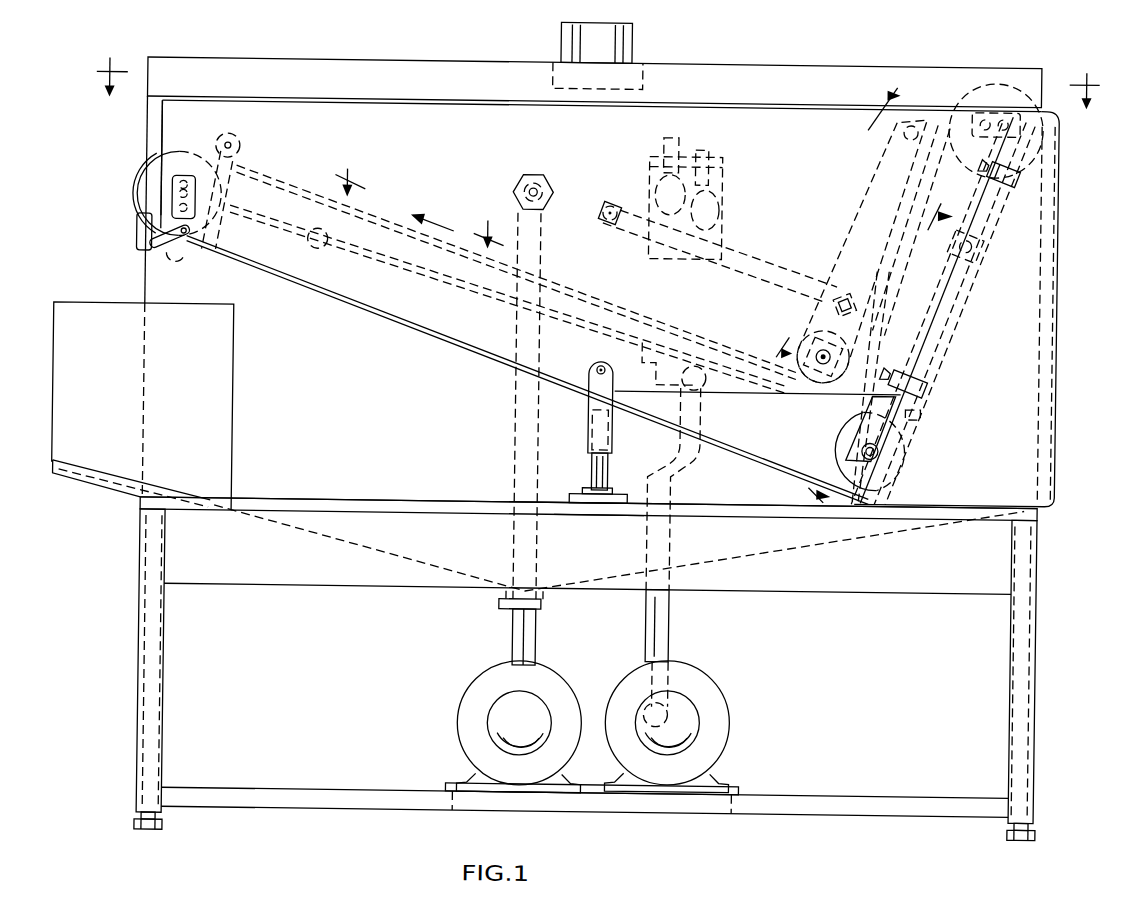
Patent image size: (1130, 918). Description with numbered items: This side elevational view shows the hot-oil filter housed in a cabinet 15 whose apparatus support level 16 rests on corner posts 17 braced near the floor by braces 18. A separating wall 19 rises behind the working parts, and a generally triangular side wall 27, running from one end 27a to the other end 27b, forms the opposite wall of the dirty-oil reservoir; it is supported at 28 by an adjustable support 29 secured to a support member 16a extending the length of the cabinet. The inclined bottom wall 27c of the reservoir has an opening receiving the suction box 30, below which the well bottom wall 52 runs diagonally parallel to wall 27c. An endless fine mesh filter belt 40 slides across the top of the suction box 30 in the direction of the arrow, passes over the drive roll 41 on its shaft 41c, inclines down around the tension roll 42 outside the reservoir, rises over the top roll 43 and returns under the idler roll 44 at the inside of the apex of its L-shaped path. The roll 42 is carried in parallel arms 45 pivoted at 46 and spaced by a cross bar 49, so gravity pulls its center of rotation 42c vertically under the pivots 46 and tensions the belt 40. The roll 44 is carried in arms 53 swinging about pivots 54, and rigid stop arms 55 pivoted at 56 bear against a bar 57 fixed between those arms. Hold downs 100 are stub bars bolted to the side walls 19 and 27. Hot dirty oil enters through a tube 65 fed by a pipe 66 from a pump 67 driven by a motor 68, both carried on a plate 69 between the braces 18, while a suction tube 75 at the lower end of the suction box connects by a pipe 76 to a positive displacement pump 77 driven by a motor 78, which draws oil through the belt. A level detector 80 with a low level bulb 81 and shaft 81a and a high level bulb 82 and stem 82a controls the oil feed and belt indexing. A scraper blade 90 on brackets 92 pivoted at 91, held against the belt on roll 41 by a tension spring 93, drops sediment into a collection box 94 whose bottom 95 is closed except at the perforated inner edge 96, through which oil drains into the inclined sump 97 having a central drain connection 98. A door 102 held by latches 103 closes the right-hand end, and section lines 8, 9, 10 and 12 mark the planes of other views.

The section line 8- 8 is at (598, 70).
The section line 9- 9 is at (827, 210).
The section line 10- 10 is at (863, 352).
The section line 12- 12 is at (420, 196).
The cabinet 15 is at (1050, 560).
The apparatus support level 16 is at (356, 497).
The support member 16a is at (585, 510).
The corner posts 17 is at (148, 642).
The braces 18 is at (430, 806).
The separating wall 19 is at (402, 394).
The side wall 27 is at (158, 119).
The end of side wall 27a is at (1035, 175).
The end of side wall 27b is at (162, 108).
The inclined bottom wall 27c is at (560, 282).
The support point 28 is at (600, 360).
The adjustable support 29 is at (597, 436).
The suction box 30 is at (612, 300).
The endless fine mesh filter belt 40 is at (372, 210).
The drive roll 41 is at (155, 165).
The shaft 41c is at (213, 136).
The tension roll 42 is at (838, 422).
The center of rotation 42c is at (885, 444).
The top roll 43 is at (1002, 80).
The idler roll 44 is at (818, 338).
The arms 45 is at (928, 313).
The pivots 46 is at (1004, 232).
The cross bar 49 is at (925, 407).
The well bottom wall 52 is at (322, 242).
The arms 53 is at (880, 190).
The pivots 54 is at (972, 108).
The stop arms 55 is at (765, 254).
The pivots 56 is at (605, 204).
The duct fitting 57 is at (840, 285).
The tube 65 is at (516, 181).
The pipe 66 is at (518, 455).
The pump 67 is at (474, 687).
The motor 68 is at (505, 716).
The plate 69 is at (628, 790).
The suction tube 75 is at (703, 360).
The pipe 76 is at (678, 600).
The pump 77 is at (730, 685).
The motor 78 is at (713, 714).
The high and low level detector 80 is at (732, 170).
The low level bulb 81 is at (722, 190).
The shaft 81a is at (714, 148).
The high level bulb 82 is at (656, 178).
The stem 82a is at (684, 135).
The scraper blade 90 is at (180, 252).
The pivot 91 is at (212, 228).
The brackets 92 is at (139, 226).
The tension spring 93 is at (150, 198).
The collection box 94 is at (237, 413).
The bottom 95 is at (88, 476).
The opening 96 is at (215, 495).
The sump 97 is at (345, 562).
The drain connection 98 is at (548, 600).
The hold downs 100 is at (255, 136).
The door 102 is at (1062, 335).
The latches 103 is at (1010, 158).